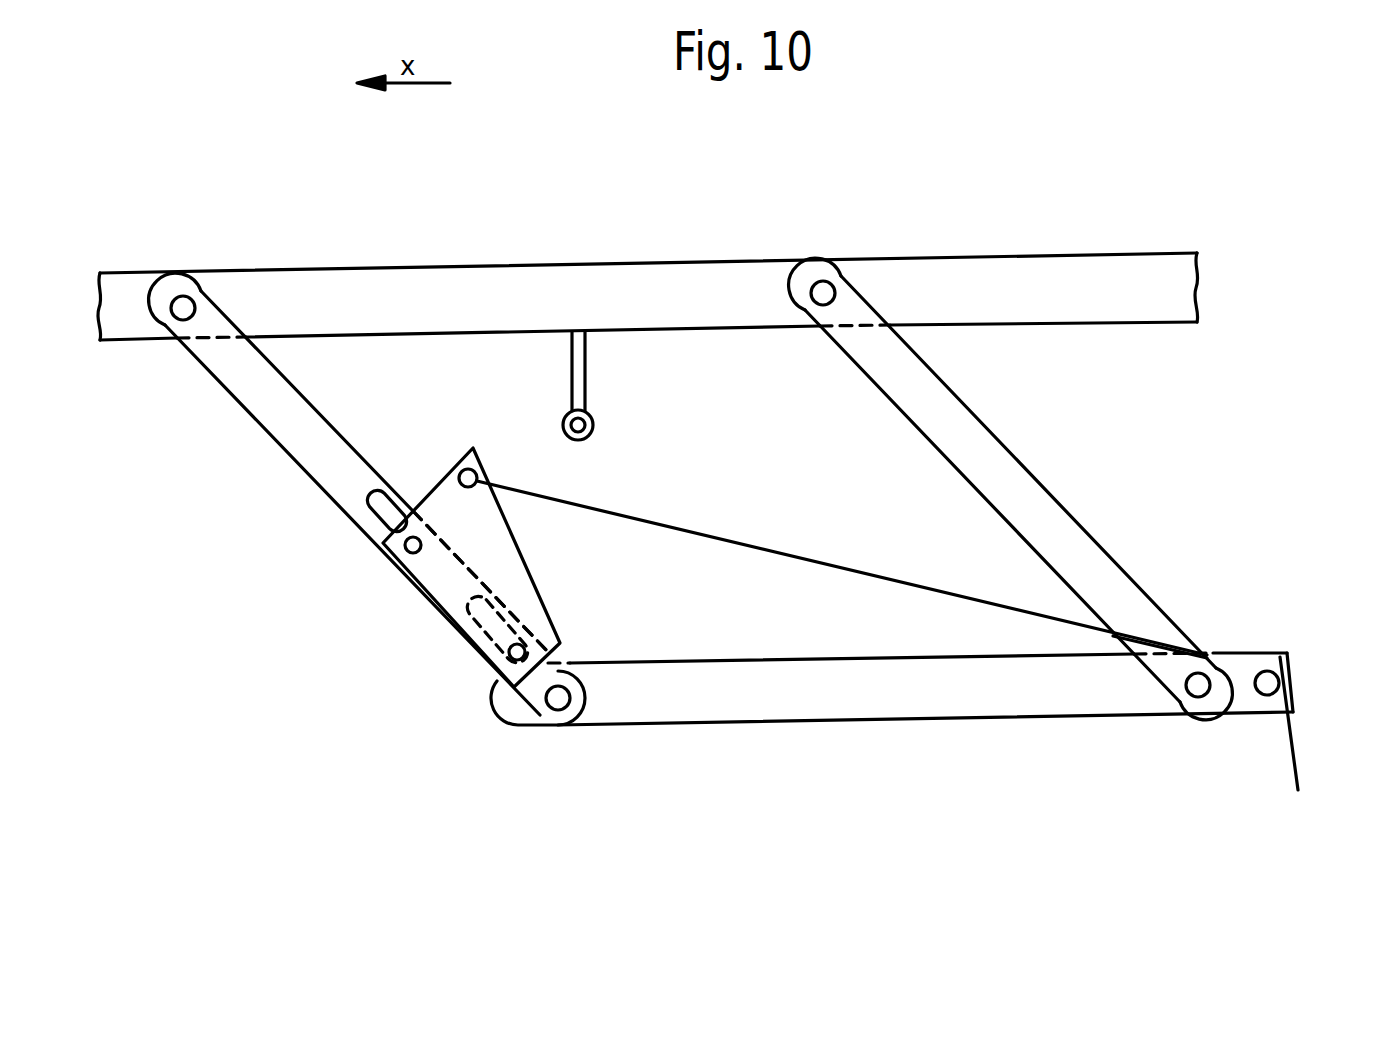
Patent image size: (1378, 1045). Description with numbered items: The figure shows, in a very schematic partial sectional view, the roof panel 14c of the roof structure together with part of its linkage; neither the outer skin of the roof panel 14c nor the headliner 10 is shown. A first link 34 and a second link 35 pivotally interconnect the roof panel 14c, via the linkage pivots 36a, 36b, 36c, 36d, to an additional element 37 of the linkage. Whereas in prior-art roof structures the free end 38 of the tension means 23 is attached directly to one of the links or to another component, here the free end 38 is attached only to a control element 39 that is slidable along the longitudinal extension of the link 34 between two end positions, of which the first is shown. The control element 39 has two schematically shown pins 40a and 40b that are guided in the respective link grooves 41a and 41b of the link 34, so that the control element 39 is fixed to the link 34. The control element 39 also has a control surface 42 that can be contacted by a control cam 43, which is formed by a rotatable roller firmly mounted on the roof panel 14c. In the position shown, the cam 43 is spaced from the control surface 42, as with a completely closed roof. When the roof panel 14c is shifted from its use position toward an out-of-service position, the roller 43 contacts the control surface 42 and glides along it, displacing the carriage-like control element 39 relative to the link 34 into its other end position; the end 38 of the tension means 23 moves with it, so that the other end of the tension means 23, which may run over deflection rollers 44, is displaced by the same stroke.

The headliner 10 is at (1318, 152).
The roof panel 14c is at (1063, 280).
The tension means 23 is at (708, 525).
The first link 34 is at (258, 387).
The second link 35 is at (1035, 503).
The linkage pivot 36a is at (185, 300).
The linkage pivot 36b is at (830, 280).
The linkage pivot 36c is at (542, 718).
The linkage pivot 36d is at (1198, 690).
The additional element of the linkage 37 is at (858, 700).
The free end of the tension means 38 is at (472, 468).
The control element 39 is at (475, 547).
The pin 40a is at (510, 660).
The pin 40b is at (403, 550).
The link groove 41a is at (460, 637).
The link groove 41b is at (368, 502).
The control surface 42 is at (548, 598).
The control cam 43 is at (593, 417).
The deflection roller 44 is at (1262, 695).